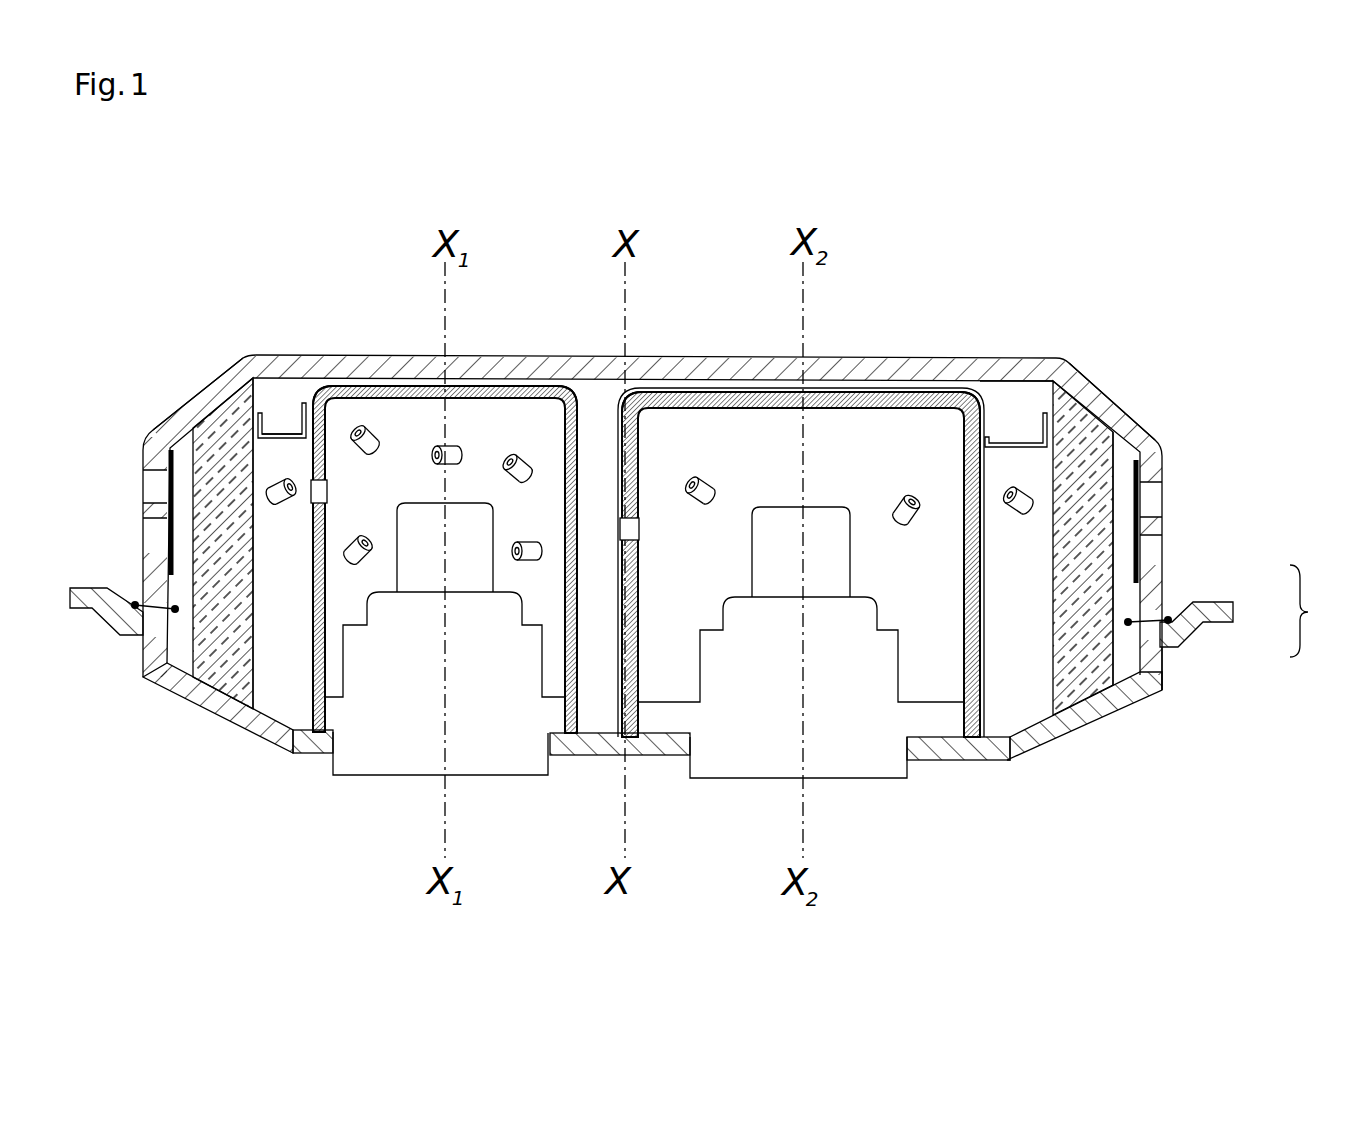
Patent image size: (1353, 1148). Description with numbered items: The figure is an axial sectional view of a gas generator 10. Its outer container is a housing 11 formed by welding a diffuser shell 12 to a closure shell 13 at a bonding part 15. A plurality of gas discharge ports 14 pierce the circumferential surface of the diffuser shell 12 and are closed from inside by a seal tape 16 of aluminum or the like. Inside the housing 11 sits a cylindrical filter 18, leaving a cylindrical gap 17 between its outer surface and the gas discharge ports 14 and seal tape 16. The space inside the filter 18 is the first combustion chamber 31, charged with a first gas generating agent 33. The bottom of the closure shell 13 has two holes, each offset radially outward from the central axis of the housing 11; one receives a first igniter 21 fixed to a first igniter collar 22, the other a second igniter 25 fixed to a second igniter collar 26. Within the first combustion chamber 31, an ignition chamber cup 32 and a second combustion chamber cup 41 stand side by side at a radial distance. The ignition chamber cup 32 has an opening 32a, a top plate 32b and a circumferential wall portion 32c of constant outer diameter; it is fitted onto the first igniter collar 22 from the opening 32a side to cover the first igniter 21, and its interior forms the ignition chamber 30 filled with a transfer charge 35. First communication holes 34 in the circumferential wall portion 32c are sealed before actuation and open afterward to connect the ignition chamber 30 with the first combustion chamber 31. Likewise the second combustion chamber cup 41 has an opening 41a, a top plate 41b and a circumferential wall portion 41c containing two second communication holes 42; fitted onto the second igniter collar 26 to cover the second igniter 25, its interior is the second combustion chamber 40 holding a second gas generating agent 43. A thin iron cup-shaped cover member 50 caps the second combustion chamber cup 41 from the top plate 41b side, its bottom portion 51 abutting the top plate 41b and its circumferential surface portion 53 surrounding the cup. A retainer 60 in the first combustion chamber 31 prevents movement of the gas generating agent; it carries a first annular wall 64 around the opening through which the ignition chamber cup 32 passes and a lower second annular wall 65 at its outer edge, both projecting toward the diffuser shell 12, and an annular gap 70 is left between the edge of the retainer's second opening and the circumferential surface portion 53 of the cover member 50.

The gas generator 10 is at (1097, 339).
The housing 11 is at (1316, 611).
The diffuser shell 12 is at (1152, 583).
The closure shell 13 is at (1162, 672).
The gas discharge ports 14 is at (157, 533).
The bonding part 15 is at (135, 603).
The seal tape 16 is at (1125, 468).
The cylindrical gap 17 is at (182, 452).
The cylindrical filter 18 is at (220, 427).
The first igniter 21 is at (420, 565).
The first igniter collar 22 is at (459, 675).
The second igniter 25 is at (776, 570).
The second igniter collar 26 is at (731, 684).
The ignition chamber 30 is at (474, 449).
The first combustion chamber 31 is at (259, 602).
The ignition chamber cup 32 is at (488, 384).
The opening 32a is at (330, 755).
The top plate 32b is at (395, 393).
The circumferential wall portion 32c is at (308, 625).
The first gas generating agent 33 is at (1020, 520).
The first communication holes 34 is at (327, 490).
The transfer charge 35 is at (372, 436).
The second combustion chamber 40 is at (900, 474).
The second combustion chamber cup 41 is at (829, 410).
The opening 41a is at (910, 760).
The top plate 41b is at (745, 410).
The circumferential wall portion 41c is at (1010, 760).
The second communication holes 42 is at (640, 530).
The second gas generating agent 43 is at (900, 530).
The cup-shaped cover member 50 is at (858, 386).
The bottom portion 51 is at (693, 389).
The circumferential surface portion 53 is at (615, 598).
The retainer 60 is at (1022, 440).
The first annular wall 64 is at (300, 417).
The second annular wall 65 is at (278, 427).
The annular gap 70 is at (967, 397).